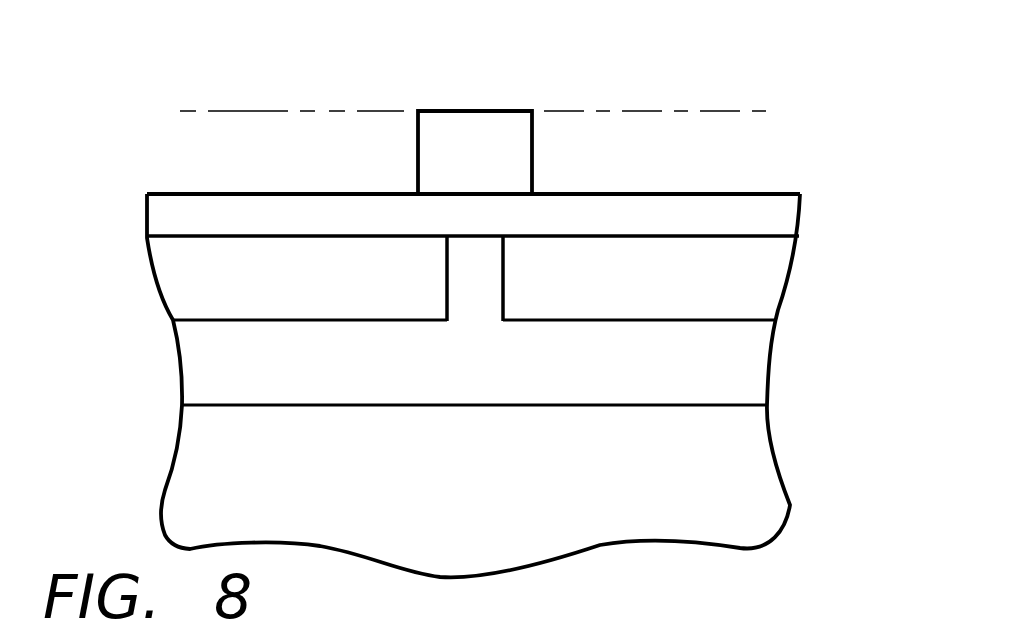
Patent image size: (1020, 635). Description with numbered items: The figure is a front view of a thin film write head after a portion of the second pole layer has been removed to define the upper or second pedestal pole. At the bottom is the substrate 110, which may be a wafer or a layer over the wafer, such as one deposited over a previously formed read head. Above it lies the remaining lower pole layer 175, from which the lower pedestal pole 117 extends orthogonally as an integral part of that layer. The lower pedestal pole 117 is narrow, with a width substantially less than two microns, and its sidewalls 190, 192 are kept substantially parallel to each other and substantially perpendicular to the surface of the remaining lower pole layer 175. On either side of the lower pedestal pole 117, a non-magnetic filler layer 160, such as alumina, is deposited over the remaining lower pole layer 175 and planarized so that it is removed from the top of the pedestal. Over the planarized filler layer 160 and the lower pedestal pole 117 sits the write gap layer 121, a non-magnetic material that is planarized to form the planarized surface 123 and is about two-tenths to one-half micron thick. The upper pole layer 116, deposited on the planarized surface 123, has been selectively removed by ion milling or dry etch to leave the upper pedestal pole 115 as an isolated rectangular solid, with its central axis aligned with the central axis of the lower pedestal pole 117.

The substrate layer 110 is at (760, 460).
The remaining lower pole layer 175 is at (760, 375).
The filler layer 160 is at (775, 276).
The sidewall 190 is at (447, 287).
The sidewall 192 is at (503, 288).
The lower pedestal pole 117 is at (475, 272).
The write gap layer 121 is at (775, 217).
The planarized surface 123 is at (297, 193).
The upper pedestal pole 115 is at (461, 140).
The upper pole layer 116 is at (688, 152).